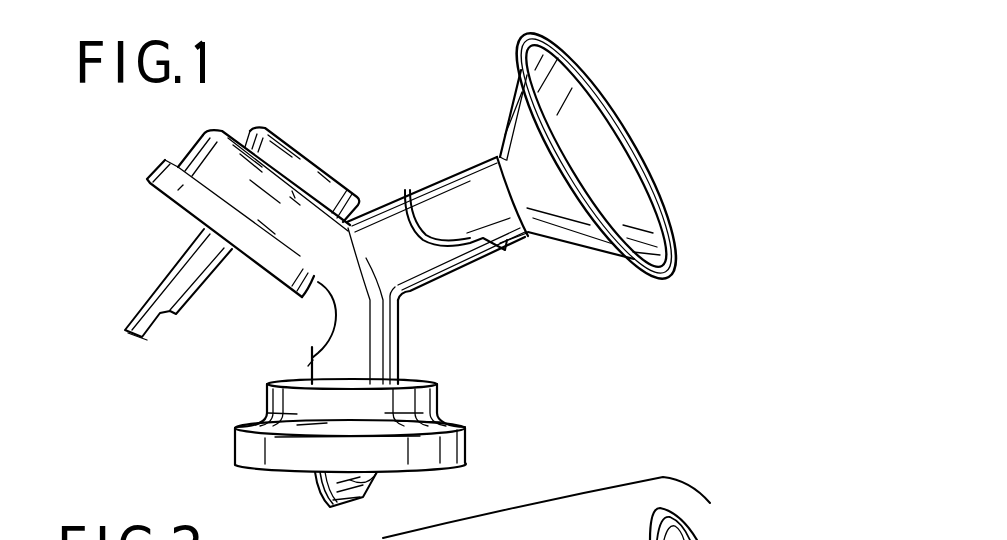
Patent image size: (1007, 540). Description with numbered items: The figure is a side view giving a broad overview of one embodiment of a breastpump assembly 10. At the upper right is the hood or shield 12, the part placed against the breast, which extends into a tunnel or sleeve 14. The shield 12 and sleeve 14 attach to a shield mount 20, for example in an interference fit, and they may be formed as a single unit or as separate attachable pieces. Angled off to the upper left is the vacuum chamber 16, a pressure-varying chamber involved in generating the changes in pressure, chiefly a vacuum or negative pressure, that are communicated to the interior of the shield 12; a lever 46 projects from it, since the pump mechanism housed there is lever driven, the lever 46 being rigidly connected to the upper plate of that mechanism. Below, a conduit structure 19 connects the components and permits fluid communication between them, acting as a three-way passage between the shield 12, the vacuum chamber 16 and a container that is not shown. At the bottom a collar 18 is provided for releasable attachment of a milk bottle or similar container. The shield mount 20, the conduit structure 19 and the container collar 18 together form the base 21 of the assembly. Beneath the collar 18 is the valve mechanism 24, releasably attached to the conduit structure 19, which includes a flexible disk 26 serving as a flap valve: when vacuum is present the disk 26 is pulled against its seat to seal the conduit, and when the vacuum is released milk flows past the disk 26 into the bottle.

The breastpump assembly 10 is at (304, 498).
The hood or shield 12 is at (583, 227).
The tunnel or sleeve 14 is at (525, 243).
The vacuum chamber 16 is at (232, 130).
The collar 18 is at (460, 450).
The conduit structure 19 is at (320, 352).
The shield mount 20 is at (384, 197).
The base 21 is at (400, 320).
The valve mechanism 24 is at (360, 497).
The flexible disk 26 is at (312, 483).
The lever 46 is at (160, 290).